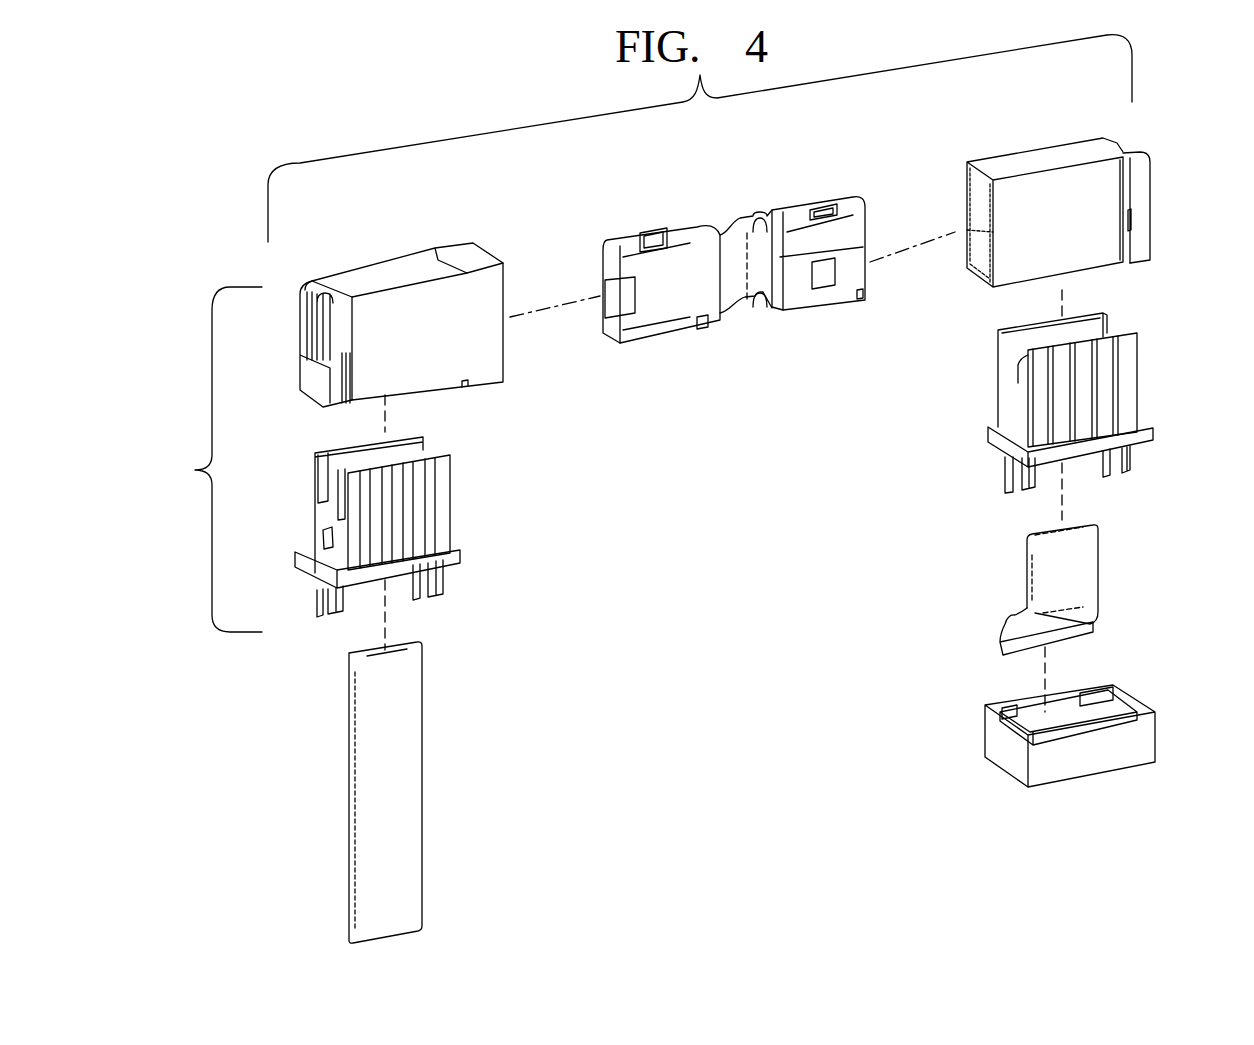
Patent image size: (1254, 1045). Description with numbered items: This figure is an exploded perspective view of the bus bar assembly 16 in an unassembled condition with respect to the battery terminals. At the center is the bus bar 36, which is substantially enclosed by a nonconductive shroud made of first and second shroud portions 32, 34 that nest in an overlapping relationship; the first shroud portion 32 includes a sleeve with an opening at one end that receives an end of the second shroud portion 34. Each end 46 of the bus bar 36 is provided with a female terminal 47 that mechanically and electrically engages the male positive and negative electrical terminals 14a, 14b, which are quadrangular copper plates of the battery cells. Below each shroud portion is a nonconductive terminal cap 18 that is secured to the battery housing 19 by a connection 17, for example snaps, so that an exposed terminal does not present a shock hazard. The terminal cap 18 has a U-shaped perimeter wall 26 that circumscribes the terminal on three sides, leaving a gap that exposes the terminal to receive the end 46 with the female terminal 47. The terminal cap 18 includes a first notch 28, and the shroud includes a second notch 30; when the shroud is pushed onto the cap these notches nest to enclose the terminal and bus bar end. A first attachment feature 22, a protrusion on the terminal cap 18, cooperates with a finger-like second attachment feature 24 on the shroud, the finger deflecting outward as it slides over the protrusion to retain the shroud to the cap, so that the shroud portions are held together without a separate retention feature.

The positive electrical terminal 14a is at (402, 810).
The negative electrical terminal 14b is at (1090, 565).
The bus bar assembly 16 is at (207, 459).
The connection 17 is at (319, 629).
The terminal cap 18 is at (733, 465).
The battery housing 19 is at (1145, 745).
The first attachment feature 22 is at (323, 537).
The second attachment feature 24 is at (313, 308).
The U-shaped perimeter wall 26 is at (437, 495).
The first notch 28 is at (337, 483).
The second notch 30 is at (343, 372).
The first shroud portion 32 is at (720, 293).
The second shroud portion 34 is at (1032, 160).
The bus bar 36 is at (729, 293).
The end 46 is at (605, 260).
The female terminal 47 is at (655, 320).